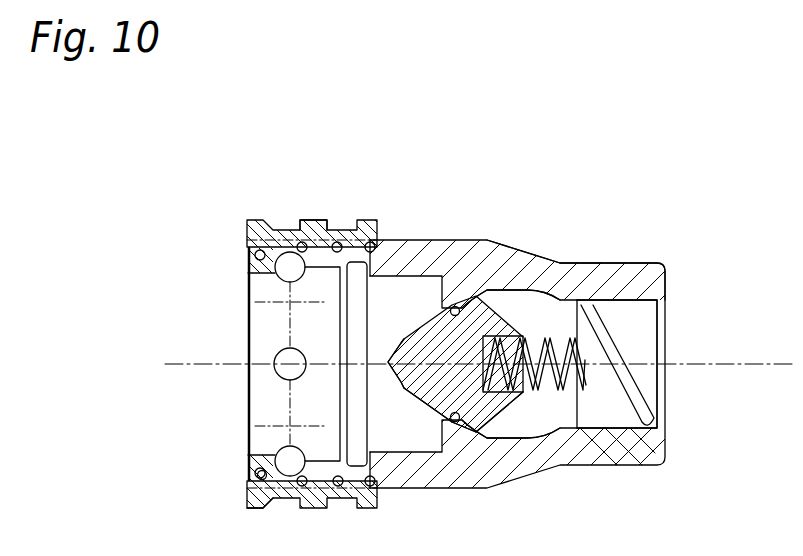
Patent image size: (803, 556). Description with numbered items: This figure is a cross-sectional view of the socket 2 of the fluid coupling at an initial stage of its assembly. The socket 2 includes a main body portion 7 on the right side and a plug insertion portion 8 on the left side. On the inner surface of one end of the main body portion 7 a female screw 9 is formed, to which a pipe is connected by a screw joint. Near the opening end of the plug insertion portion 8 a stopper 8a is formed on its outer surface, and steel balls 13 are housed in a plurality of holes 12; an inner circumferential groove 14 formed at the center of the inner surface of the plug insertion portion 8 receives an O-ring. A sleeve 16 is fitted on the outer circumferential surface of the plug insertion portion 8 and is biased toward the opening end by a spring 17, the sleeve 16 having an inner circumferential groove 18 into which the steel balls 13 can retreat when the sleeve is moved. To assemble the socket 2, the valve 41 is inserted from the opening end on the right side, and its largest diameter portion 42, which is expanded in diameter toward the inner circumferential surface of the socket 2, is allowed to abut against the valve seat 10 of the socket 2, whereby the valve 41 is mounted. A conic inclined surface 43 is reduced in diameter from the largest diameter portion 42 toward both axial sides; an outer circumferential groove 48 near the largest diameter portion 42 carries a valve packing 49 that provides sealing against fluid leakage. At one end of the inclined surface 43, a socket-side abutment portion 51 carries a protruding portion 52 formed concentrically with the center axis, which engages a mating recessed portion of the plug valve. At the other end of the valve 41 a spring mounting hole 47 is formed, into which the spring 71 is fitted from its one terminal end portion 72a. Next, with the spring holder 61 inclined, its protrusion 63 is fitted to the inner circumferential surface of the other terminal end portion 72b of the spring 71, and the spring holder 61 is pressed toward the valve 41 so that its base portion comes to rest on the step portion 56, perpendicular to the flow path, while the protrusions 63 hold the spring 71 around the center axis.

The socket 2 is at (456, 172).
The main body portion 7 is at (517, 240).
The plug insertion portion 8 is at (440, 240).
The stopper 8a is at (263, 481).
The female screw 9 is at (647, 336).
The valve seat 10 is at (458, 430).
The holes 12 is at (313, 232).
The steel balls 13 is at (288, 252).
The inner circumferential groove 14 is at (367, 262).
The sleeve 16 is at (333, 240).
The spring 17 is at (370, 242).
The inner circumferential groove 18 is at (250, 232).
The valve 41 is at (432, 425).
The largest diameter portion 42 is at (470, 433).
The conic inclined surface 43 is at (422, 437).
The spring mounting hole 47 is at (562, 392).
The outer circumferential groove 48 is at (495, 393).
The valve packing 49 is at (451, 310).
The socket-side abutment portion 51 is at (388, 362).
The protruding portion 52 is at (250, 336).
The step portion 56 is at (574, 278).
The spring holder 61 is at (598, 272).
The protrusions 63 is at (652, 414).
The spring 71 is at (560, 455).
The terminal end portion 72a is at (523, 258).
The terminal end portion 72b is at (595, 430).